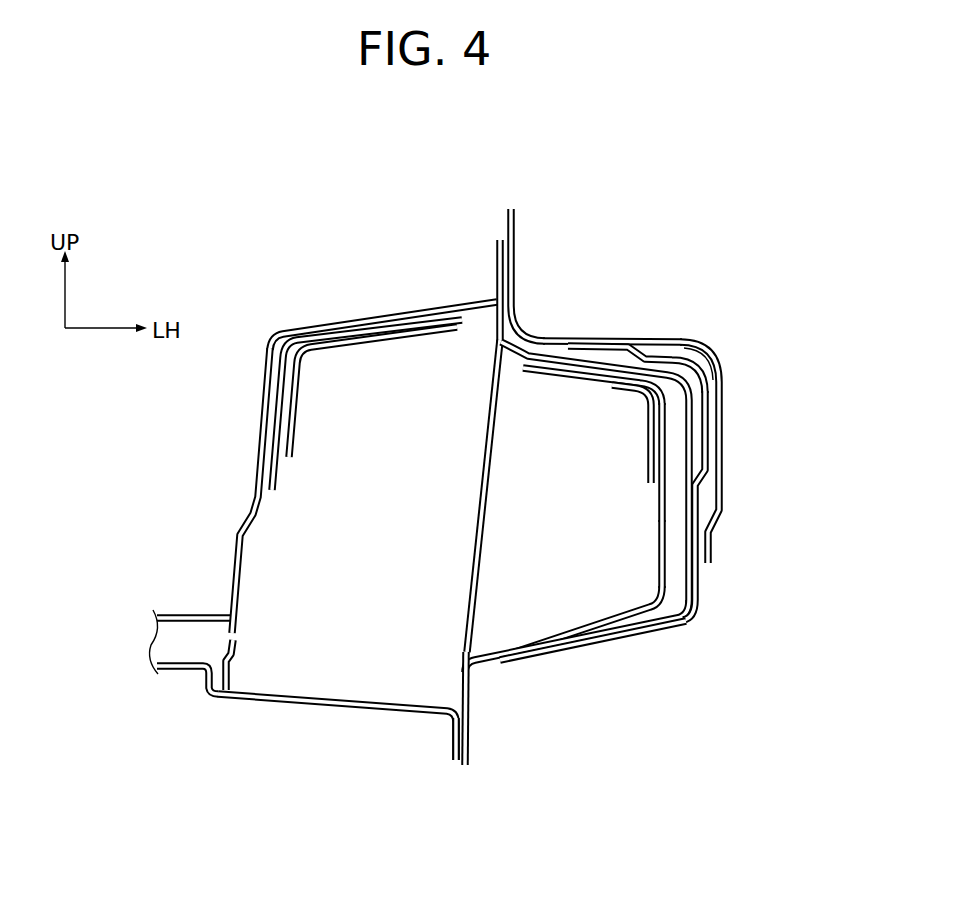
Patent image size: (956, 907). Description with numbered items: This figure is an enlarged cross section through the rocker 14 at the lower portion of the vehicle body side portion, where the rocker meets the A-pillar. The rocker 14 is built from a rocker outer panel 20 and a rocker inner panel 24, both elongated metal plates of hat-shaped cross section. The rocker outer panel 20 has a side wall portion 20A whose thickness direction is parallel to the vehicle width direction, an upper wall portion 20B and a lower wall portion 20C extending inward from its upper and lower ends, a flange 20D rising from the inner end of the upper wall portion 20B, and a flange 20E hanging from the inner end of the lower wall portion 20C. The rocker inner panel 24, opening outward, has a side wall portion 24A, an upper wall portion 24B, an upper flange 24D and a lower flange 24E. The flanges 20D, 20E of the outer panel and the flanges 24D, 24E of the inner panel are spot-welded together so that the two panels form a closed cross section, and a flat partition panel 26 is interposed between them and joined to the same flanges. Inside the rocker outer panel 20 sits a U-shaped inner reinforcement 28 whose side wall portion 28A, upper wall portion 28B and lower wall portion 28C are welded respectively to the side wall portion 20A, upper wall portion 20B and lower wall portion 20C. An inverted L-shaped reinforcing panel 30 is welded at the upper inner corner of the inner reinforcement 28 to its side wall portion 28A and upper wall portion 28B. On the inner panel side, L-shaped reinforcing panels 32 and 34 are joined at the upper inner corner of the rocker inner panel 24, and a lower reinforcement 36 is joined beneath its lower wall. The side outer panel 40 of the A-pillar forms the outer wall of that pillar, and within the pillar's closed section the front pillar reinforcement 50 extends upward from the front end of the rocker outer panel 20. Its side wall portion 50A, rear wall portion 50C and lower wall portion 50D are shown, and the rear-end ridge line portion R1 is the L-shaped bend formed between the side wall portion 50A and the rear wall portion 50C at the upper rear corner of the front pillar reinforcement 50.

The rocker 14 is at (230, 408).
The rocker outer panel 20 is at (577, 487).
The side wall portion 20A is at (690, 527).
The upper wall portion 20B is at (588, 337).
The lower wall portion 20C is at (625, 626).
The flange 20D is at (517, 263).
The flange 20E is at (470, 735).
The rocker inner panel 24 is at (327, 506).
The side wall portion 24A is at (250, 507).
The upper wall portion 24B is at (392, 318).
The flange 24D is at (497, 263).
The flange 24E is at (455, 735).
The partition panel 26 is at (478, 518).
The inner reinforcement 28 is at (581, 512).
The side wall portion 28A is at (661, 556).
The upper wall portion 28B is at (557, 382).
The lower wall portion 28C is at (583, 620).
The reinforcing panel 30 is at (652, 431).
The reinforcing panel 32 is at (295, 410).
The reinforcing panel 34 is at (279, 467).
The lower reinforcement 36 is at (340, 707).
The side outer panel 40 is at (722, 402).
The front pillar reinforcement 50 is at (654, 498).
The side wall portion 50A is at (709, 443).
The rear wall portion 50C is at (648, 338).
The lower wall portion 50D is at (583, 646).
The rear-end ridge line portion R1 is at (694, 364).